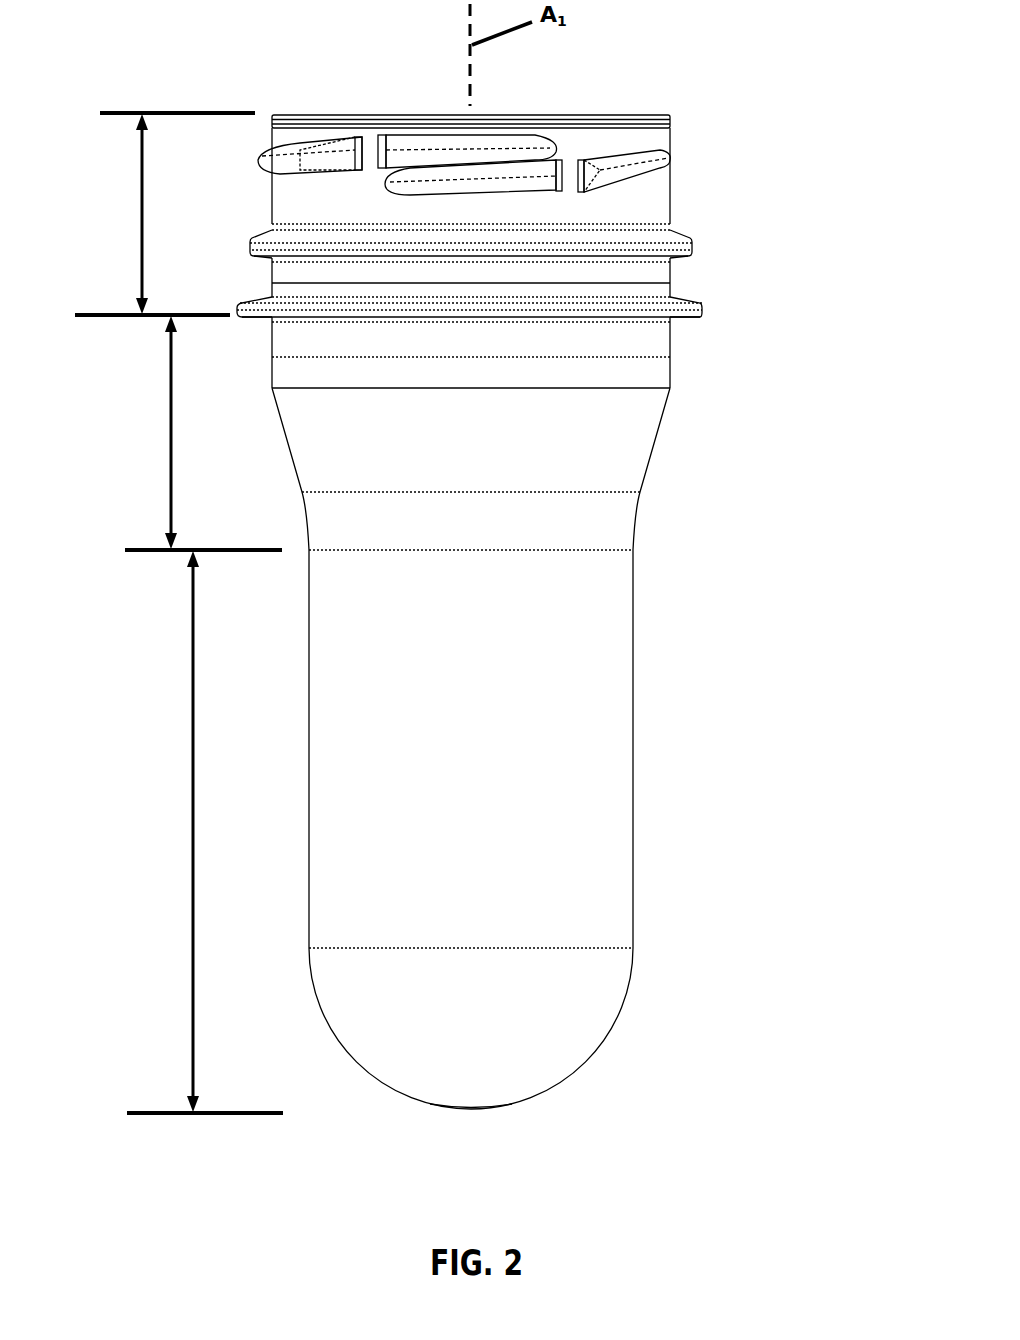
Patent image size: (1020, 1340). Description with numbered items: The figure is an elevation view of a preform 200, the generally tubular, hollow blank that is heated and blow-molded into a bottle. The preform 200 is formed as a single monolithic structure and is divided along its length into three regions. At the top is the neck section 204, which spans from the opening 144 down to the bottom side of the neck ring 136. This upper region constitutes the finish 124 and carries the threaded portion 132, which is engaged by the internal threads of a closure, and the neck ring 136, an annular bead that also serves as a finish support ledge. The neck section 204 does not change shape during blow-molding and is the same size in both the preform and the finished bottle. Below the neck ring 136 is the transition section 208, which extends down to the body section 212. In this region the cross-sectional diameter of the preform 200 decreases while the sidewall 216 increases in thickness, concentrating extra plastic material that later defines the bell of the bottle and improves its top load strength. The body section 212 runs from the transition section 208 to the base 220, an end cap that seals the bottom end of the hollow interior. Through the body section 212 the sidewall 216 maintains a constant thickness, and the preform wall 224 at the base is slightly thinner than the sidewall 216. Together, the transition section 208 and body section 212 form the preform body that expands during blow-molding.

The preform 200 is at (574, 599).
The opening 144 is at (328, 95).
The threaded portion 132 is at (677, 162).
The finish 124 is at (723, 202).
The neck ring 136 is at (702, 303).
The sidewall 216 is at (633, 668).
The preform wall 224 is at (557, 1070).
The base 220 is at (497, 1106).
The neck section 204 is at (115, 215).
The transition section 208 is at (137, 451).
The body section 212 is at (150, 787).